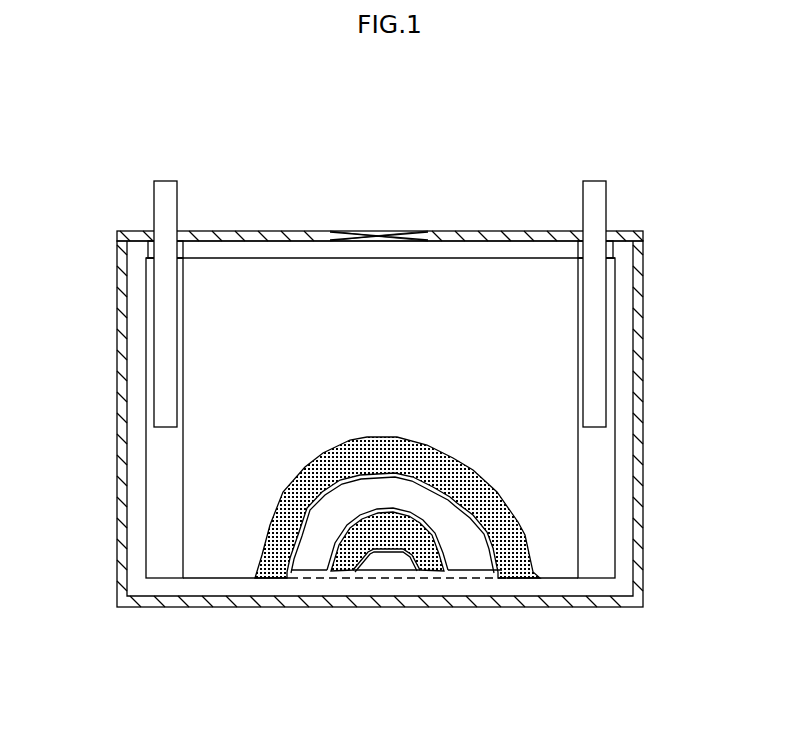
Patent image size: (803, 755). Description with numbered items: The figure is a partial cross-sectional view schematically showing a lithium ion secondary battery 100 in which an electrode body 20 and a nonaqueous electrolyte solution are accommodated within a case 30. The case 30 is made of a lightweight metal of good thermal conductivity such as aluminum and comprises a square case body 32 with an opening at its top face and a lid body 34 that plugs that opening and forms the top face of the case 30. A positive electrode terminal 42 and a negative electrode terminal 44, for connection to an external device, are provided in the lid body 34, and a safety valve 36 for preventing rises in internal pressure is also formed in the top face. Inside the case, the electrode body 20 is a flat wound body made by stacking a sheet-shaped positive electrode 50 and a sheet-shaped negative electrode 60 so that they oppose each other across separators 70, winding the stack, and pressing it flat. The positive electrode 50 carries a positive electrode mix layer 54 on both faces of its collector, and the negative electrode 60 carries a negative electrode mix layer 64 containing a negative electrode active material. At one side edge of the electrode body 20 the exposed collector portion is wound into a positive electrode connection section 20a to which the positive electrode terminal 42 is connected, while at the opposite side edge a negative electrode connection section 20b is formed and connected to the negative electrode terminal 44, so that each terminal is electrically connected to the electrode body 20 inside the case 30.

The lithium ion secondary battery 100 is at (643, 198).
The case 30 is at (644, 335).
The case body 32 is at (644, 426).
The lid body 34 is at (480, 232).
The safety valve 36 is at (383, 232).
The electrode body 20 is at (272, 287).
The positive electrode connection section 20a is at (160, 555).
The negative electrode connection section 20b is at (600, 482).
The positive electrode terminal 42 is at (165, 183).
The negative electrode terminal 44 is at (595, 183).
The positive electrode 50 is at (273, 565).
The positive electrode mix layer 54 is at (357, 643).
The negative electrode 60 is at (347, 558).
The negative electrode mix layer 64 is at (372, 643).
The separator 70 is at (217, 512).